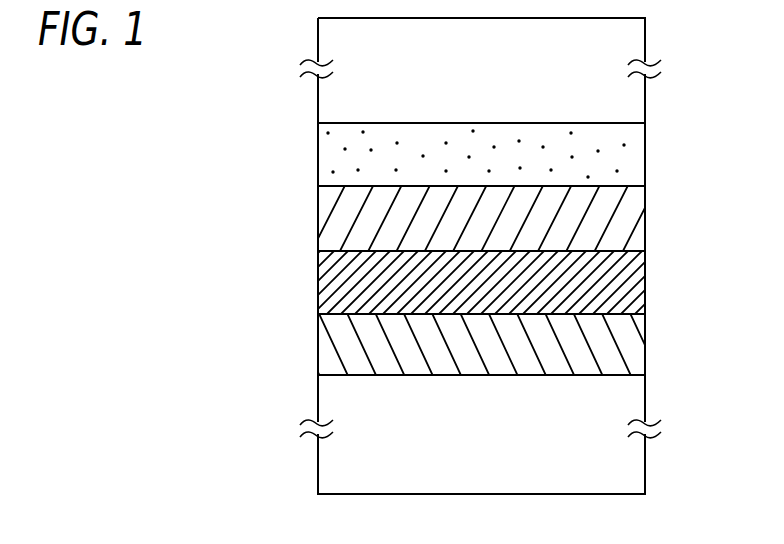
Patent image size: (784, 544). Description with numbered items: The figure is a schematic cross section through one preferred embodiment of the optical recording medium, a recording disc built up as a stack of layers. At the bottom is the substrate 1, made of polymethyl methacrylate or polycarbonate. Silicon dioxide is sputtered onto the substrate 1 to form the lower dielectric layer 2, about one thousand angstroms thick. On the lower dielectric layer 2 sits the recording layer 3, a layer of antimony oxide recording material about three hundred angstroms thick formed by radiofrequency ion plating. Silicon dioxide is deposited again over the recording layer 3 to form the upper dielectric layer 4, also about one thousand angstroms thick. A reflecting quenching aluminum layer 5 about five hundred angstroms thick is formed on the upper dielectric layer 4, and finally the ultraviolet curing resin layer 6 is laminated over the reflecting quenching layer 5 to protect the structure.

The substrate 1 is at (623, 474).
The lower dielectric layer 2 is at (623, 351).
The recording layer 3 is at (623, 289).
The upper dielectric layer 4 is at (623, 215).
The reflecting quenching aluminum layer 5 is at (623, 161).
The ultraviolet curing resin layer 6 is at (623, 101).